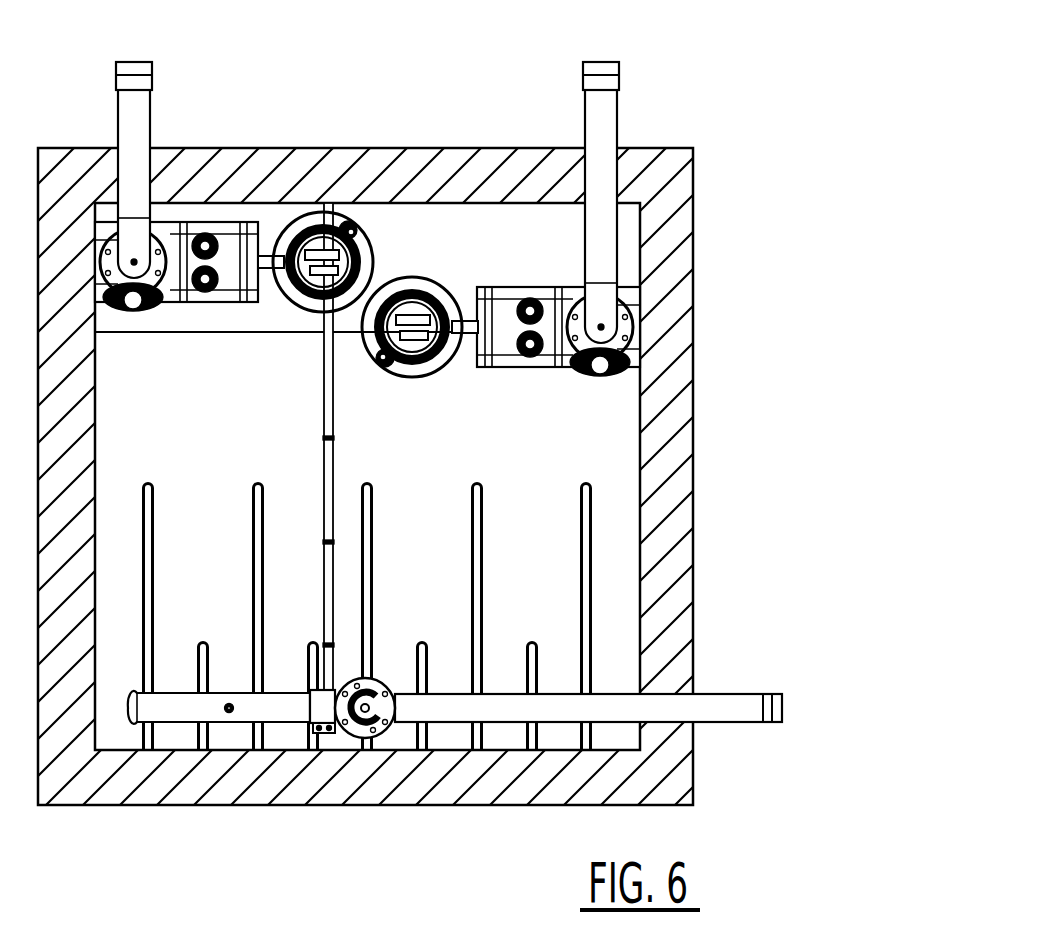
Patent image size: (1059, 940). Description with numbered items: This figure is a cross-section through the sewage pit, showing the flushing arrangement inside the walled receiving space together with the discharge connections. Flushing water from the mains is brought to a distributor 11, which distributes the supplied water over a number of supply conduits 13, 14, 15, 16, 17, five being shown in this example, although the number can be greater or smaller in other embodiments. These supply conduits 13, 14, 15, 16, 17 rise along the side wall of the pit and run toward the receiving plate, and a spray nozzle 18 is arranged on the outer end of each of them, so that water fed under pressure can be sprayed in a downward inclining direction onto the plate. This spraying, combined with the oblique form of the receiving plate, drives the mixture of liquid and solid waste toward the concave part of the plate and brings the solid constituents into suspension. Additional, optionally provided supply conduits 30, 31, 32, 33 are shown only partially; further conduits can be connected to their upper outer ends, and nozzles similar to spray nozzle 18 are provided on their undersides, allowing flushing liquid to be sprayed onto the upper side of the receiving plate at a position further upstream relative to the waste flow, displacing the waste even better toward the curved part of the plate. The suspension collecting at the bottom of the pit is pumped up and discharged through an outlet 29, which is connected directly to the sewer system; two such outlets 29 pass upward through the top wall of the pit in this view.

The distributor 11 is at (368, 705).
The supply conduit 13 is at (588, 553).
The supply conduit 14 is at (478, 545).
The supply conduit 15 is at (370, 533).
The supply conduit 16 is at (257, 523).
The supply conduit 17 is at (150, 573).
The spray nozzle 18 is at (148, 485).
The outlet 29 is at (137, 118).
The additional supply conduit 30 is at (533, 667).
The additional supply conduit 31 is at (425, 667).
The additional supply conduit 32 is at (313, 663).
The additional supply conduit 33 is at (203, 659).